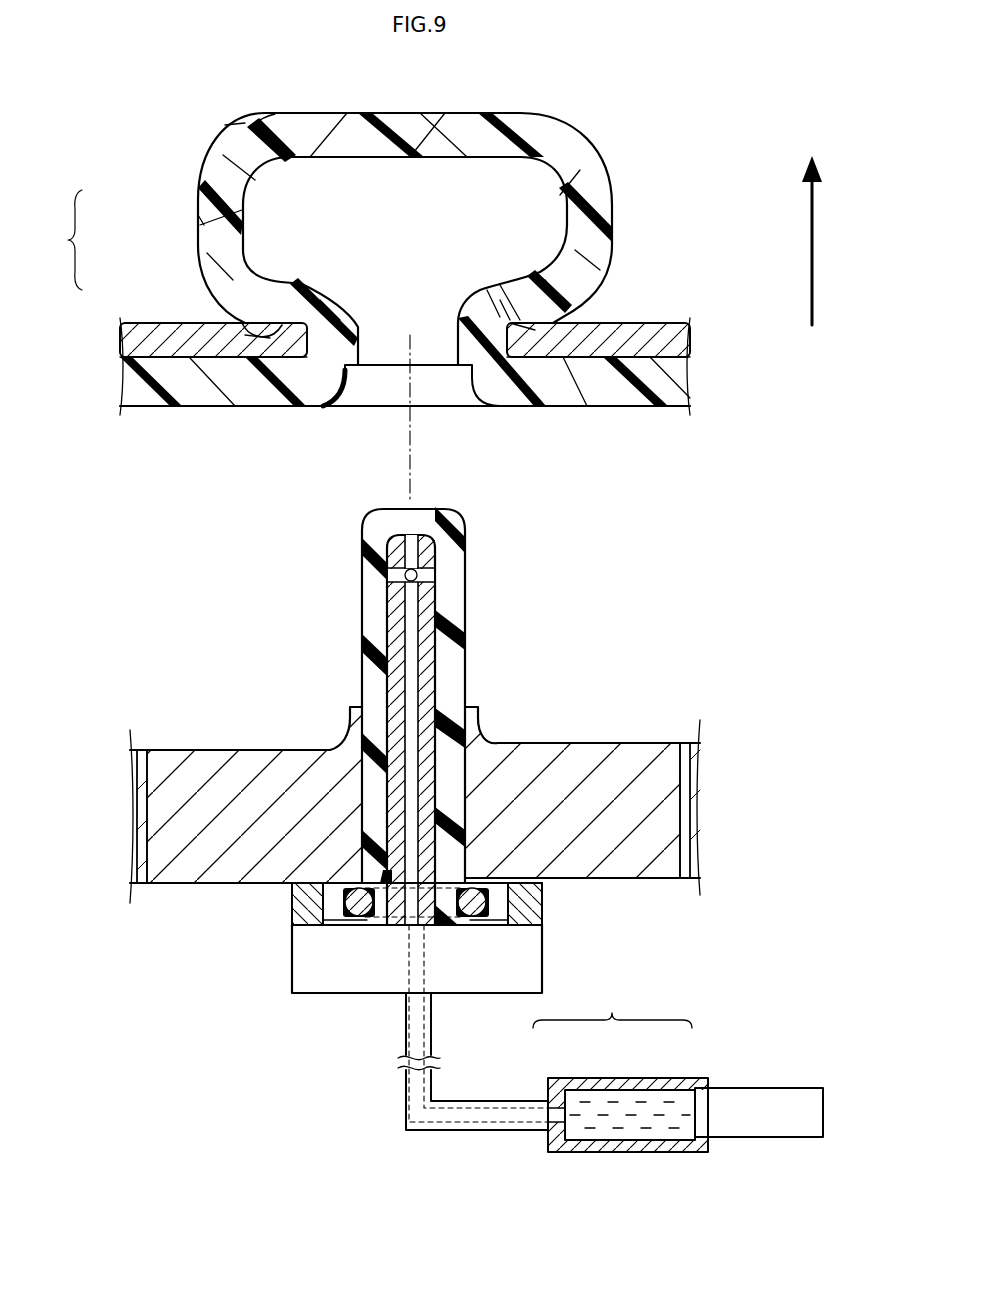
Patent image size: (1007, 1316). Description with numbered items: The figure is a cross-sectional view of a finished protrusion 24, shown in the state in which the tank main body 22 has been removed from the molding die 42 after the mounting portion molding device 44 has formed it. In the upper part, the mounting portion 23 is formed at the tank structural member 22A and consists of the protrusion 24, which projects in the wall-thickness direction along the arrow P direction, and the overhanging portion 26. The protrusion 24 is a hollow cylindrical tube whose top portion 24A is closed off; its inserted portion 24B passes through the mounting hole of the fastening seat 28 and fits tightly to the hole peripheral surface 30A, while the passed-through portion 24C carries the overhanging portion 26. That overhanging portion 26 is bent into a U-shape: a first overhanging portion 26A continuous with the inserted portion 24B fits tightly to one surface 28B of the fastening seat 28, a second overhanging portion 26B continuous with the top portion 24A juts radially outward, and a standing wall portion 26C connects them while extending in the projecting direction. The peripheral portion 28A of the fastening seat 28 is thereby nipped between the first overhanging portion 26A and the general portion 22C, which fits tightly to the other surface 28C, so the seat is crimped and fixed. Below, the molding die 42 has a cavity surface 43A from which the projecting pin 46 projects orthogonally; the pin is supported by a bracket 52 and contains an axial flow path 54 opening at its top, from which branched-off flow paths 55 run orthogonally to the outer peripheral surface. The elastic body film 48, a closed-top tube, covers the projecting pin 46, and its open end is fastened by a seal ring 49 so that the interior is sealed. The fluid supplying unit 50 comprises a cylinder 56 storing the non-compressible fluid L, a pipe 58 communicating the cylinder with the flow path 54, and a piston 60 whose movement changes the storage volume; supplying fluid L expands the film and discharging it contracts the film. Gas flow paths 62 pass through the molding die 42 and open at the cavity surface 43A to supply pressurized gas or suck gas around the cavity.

The mounting portion 23 is at (133, 112).
The protrusion 24 is at (608, 135).
The top portion 24A is at (410, 113).
The inserted portion 24B is at (525, 345).
The passed-through portion 24C is at (258, 122).
The overhanging portion 26 is at (61, 240).
The first overhanging portion 26A is at (248, 332).
The second overhanging portion 26B is at (240, 128).
The standing wall portion 26C is at (195, 222).
The tank main body 22 is at (411, 403).
The tank structural member 22A is at (668, 412).
The general portion 22C is at (528, 407).
The fastening seat 28 is at (662, 318).
The peripheral portion 28A is at (520, 320).
The one surface 28B is at (627, 323).
The another surface 28C is at (595, 357).
The hole peripheral surface 30A is at (307, 342).
The arrow P direction P is at (812, 240).
The molding die 42 is at (200, 886).
The cavity surface 43A is at (160, 750).
The mounting portion molding device 44 is at (280, 1043).
The projecting pin 46 is at (437, 680).
The elastic body film 48 is at (362, 600).
The seal ring 49 is at (485, 905).
The fluid supplying unit 50 is at (612, 1008).
The bracket 52 is at (542, 943).
The flow path 54 is at (407, 545).
The branched-off flow path 55 is at (430, 575).
The cylinder 56 is at (625, 1080).
The pipe 58 is at (512, 1100).
The piston 60 is at (720, 1088).
The gas flow path 62 is at (148, 880).
The fluid L is at (628, 1130).